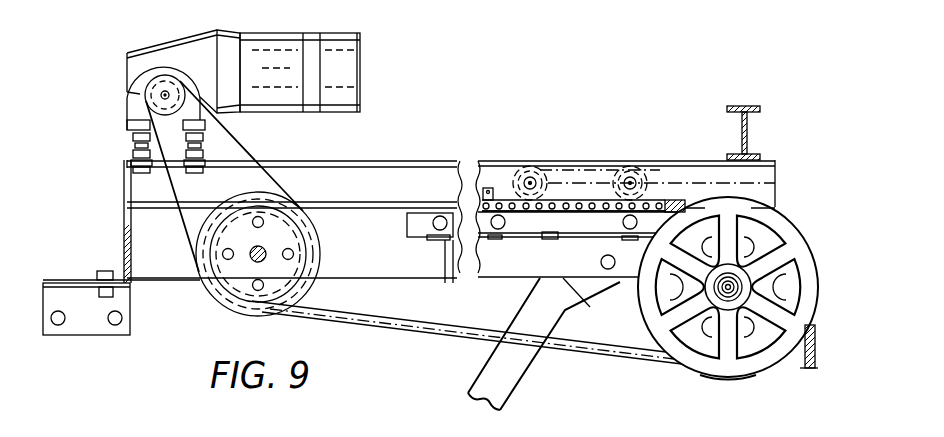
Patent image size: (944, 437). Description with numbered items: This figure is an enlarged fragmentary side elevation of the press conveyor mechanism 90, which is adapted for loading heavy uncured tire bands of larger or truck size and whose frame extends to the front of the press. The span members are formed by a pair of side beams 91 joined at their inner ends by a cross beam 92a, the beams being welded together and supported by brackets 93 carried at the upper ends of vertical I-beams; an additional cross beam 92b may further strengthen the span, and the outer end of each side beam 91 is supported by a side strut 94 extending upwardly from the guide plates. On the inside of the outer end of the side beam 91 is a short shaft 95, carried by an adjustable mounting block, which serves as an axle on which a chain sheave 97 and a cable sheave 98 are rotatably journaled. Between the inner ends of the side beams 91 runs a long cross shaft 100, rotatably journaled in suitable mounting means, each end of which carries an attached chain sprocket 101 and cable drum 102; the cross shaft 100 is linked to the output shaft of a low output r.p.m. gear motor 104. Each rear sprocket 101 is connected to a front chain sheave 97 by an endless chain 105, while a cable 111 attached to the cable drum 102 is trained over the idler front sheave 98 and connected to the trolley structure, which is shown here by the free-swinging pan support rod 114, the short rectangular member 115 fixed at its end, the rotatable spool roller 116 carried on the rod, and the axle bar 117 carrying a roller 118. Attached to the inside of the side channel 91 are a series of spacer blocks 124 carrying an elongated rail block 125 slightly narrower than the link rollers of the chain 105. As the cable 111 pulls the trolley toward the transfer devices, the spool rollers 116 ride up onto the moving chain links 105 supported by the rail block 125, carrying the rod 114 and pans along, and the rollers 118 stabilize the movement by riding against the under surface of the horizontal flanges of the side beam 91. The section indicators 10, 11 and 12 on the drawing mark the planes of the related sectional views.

The conveyor mechanism 90 is at (473, 141).
The side beams 91 is at (347, 170).
The cross beam 92a is at (126, 214).
The additional cross beam 92b is at (746, 106).
The brackets 93 is at (95, 327).
The side struts 94 is at (507, 397).
The short shaft 95 is at (723, 290).
The chain sheave 97 is at (767, 338).
The cable sheave 98 is at (735, 371).
The cross shaft 100 is at (249, 258).
The chain sprocket 101 is at (277, 192).
The cable drum 102 is at (217, 210).
The gear motor 104 is at (353, 65).
The endless chain 105 is at (443, 330).
The cable 111 is at (813, 368).
The pan support rod 114 is at (532, 188).
The rectangular member 115 is at (592, 170).
The spool roller 116 is at (534, 178).
The axle bar 117 is at (645, 182).
The roller 118 is at (634, 174).
The spacer blocks 124 is at (488, 243).
The rail block 125 is at (547, 234).
The section line 10 is at (428, 252).
The section line 11 is at (810, 224).
The section line 12 is at (727, 162).